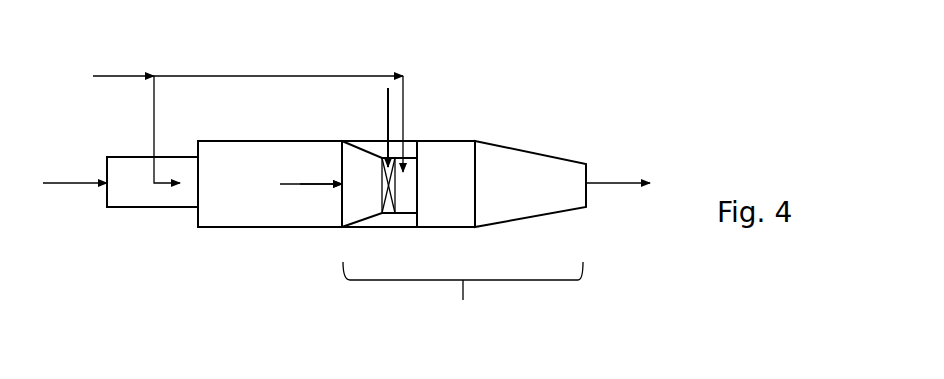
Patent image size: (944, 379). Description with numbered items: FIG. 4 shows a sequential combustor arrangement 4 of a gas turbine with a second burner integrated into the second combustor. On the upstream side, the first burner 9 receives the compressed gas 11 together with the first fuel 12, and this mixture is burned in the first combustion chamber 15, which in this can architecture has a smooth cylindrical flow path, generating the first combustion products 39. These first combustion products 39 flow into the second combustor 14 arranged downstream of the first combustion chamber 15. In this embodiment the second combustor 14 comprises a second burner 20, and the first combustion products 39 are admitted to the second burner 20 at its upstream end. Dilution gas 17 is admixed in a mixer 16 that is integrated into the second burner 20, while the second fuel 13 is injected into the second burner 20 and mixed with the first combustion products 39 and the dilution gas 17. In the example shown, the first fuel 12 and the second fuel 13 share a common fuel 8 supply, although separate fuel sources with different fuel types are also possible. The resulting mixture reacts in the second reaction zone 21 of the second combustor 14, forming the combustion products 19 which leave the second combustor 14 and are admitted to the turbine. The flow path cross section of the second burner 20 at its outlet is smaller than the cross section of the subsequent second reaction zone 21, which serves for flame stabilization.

The sequential combustor arrangement 4 is at (560, 45).
The common fuel supply 8 is at (248, 63).
The first burner 9 is at (152, 182).
The compressed gas 11 is at (75, 171).
The first fuel 12 is at (167, 129).
The second fuel 13 is at (418, 124).
The second combustor 14 is at (456, 320).
The first combustion chamber 15 is at (295, 184).
The mixer 16 is at (388, 213).
The dilution gas 17 is at (374, 127).
The combustion products 19 is at (562, 184).
The second burner 20 is at (360, 202).
The second reaction zone 21 is at (467, 184).
The first combustion products 39 is at (314, 173).